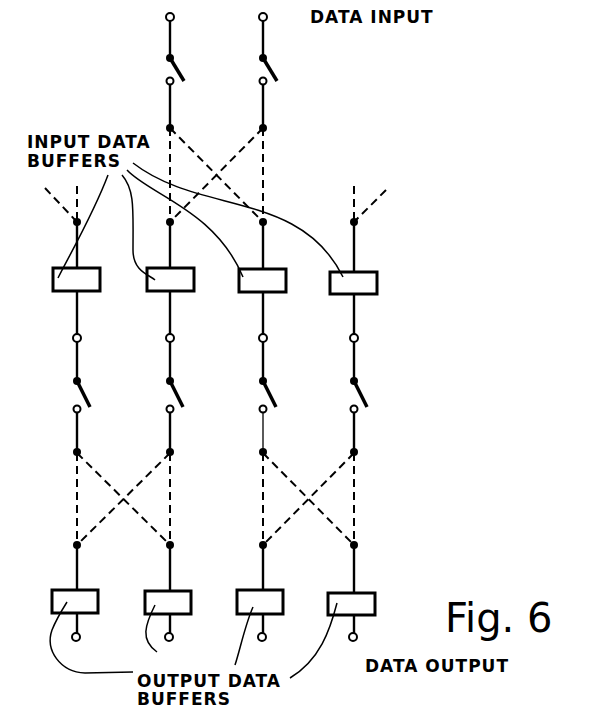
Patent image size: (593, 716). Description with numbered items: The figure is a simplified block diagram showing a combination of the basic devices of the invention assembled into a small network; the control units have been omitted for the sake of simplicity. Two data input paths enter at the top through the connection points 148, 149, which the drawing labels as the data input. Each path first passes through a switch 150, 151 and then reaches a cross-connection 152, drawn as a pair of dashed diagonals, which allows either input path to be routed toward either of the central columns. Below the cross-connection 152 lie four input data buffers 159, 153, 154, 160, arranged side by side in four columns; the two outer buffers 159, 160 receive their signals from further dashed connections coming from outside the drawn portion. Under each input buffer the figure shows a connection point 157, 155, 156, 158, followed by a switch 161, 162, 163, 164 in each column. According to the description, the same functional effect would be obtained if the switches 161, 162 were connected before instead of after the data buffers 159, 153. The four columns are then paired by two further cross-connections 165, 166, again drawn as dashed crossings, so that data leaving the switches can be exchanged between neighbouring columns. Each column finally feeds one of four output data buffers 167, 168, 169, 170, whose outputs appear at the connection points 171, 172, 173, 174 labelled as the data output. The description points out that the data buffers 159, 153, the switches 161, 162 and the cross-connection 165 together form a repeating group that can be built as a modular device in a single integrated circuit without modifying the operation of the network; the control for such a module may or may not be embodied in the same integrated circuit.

The data input terminal 148 is at (166, 19).
The data input terminal 149 is at (267, 20).
The switch 150 is at (181, 67).
The switch 151 is at (274, 67).
The cross-connection 152 is at (218, 174).
The data buffer 153 is at (205, 259).
The data buffer 154 is at (286, 276).
The terminal 155 is at (174, 338).
The terminal 156 is at (267, 338).
The terminal 157 is at (81, 338).
The terminal 158 is at (358, 338).
The data buffer 159 is at (100, 274).
The data buffer 160 is at (377, 280).
The switch 161 is at (88, 401).
The switch 162 is at (181, 401).
The switch 163 is at (274, 401).
The switch 164 is at (365, 401).
The cross-connection 165 is at (122, 497).
The cross-connection 166 is at (307, 497).
The data buffer 167 is at (98, 600).
The data buffer 168 is at (191, 600).
The data buffer 169 is at (283, 600).
The data buffer 170 is at (375, 603).
The data output terminal 171 is at (80, 639).
The data output terminal 172 is at (173, 639).
The data output terminal 173 is at (266, 639).
The data output terminal 174 is at (357, 639).